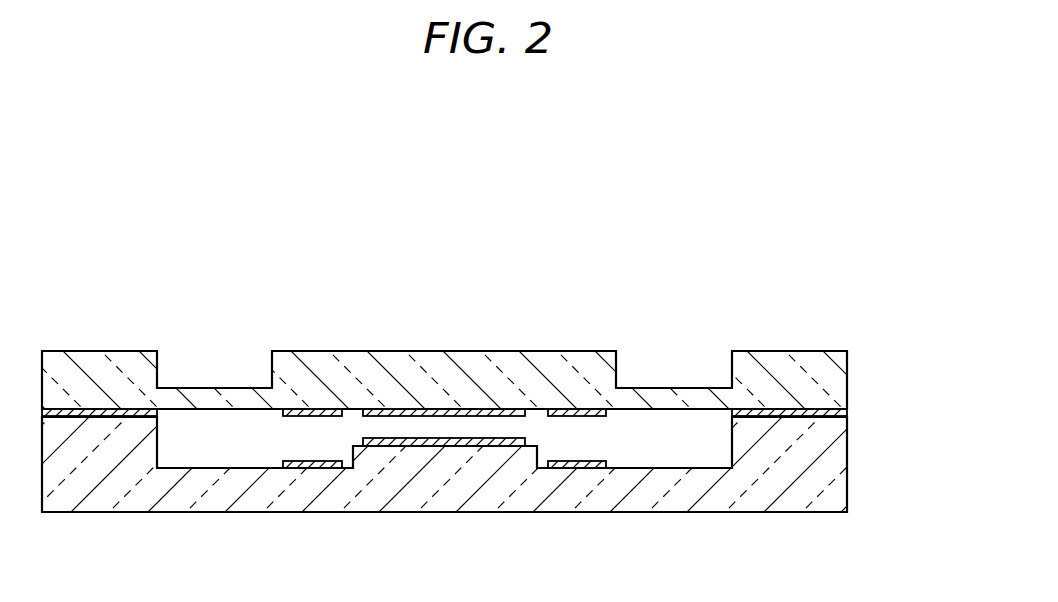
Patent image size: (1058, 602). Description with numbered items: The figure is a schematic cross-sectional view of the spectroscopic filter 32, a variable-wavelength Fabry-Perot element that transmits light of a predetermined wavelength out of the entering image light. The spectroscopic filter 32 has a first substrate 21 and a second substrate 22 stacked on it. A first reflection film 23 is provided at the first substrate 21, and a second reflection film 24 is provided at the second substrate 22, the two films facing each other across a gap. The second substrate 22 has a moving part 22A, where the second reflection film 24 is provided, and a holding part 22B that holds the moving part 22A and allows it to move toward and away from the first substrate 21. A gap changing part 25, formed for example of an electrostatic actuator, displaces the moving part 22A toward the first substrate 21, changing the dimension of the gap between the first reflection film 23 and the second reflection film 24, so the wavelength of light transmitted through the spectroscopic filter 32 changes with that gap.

The first substrate 21 is at (848, 478).
The second substrate 22 is at (528, 358).
The moving part 22A is at (362, 370).
The holding part 22B is at (200, 387).
The first reflection film 23 is at (487, 448).
The second reflection film 24 is at (478, 407).
The gap changing part 25 is at (283, 415).
The spectroscopic filter 32 is at (755, 210).